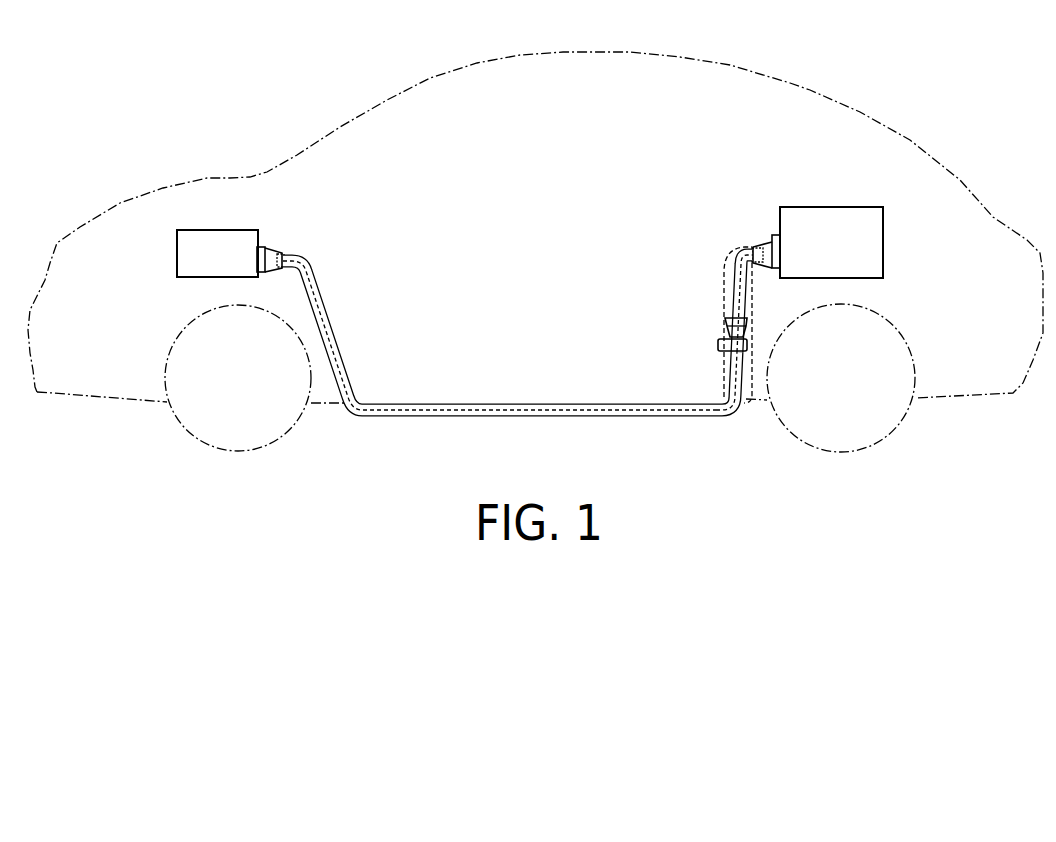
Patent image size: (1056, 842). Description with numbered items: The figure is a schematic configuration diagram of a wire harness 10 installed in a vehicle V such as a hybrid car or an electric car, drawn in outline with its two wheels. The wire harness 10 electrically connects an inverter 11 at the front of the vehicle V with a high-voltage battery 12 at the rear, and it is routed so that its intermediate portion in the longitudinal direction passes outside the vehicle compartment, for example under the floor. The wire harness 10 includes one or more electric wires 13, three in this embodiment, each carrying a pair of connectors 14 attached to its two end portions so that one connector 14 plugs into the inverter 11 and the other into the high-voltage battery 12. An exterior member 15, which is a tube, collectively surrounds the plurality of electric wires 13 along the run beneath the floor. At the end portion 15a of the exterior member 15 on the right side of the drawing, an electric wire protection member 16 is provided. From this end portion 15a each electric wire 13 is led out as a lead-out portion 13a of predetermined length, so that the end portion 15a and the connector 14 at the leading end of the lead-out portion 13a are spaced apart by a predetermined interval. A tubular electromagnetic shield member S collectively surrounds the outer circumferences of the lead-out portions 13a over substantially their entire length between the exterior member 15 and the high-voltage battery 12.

The vehicle V is at (805, 88).
The wire harness 10 is at (530, 277).
The inverter 11 is at (228, 230).
The high-voltage battery 12 is at (825, 207).
The electric wire 13 is at (325, 308).
The lead-out portion 13a is at (735, 283).
The connector 14 is at (268, 247).
The exterior member 15 is at (724, 366).
The end portion of the exterior member 15a is at (718, 343).
The electric wire protection member 16 is at (725, 322).
The electromagnetic shield member S is at (733, 247).